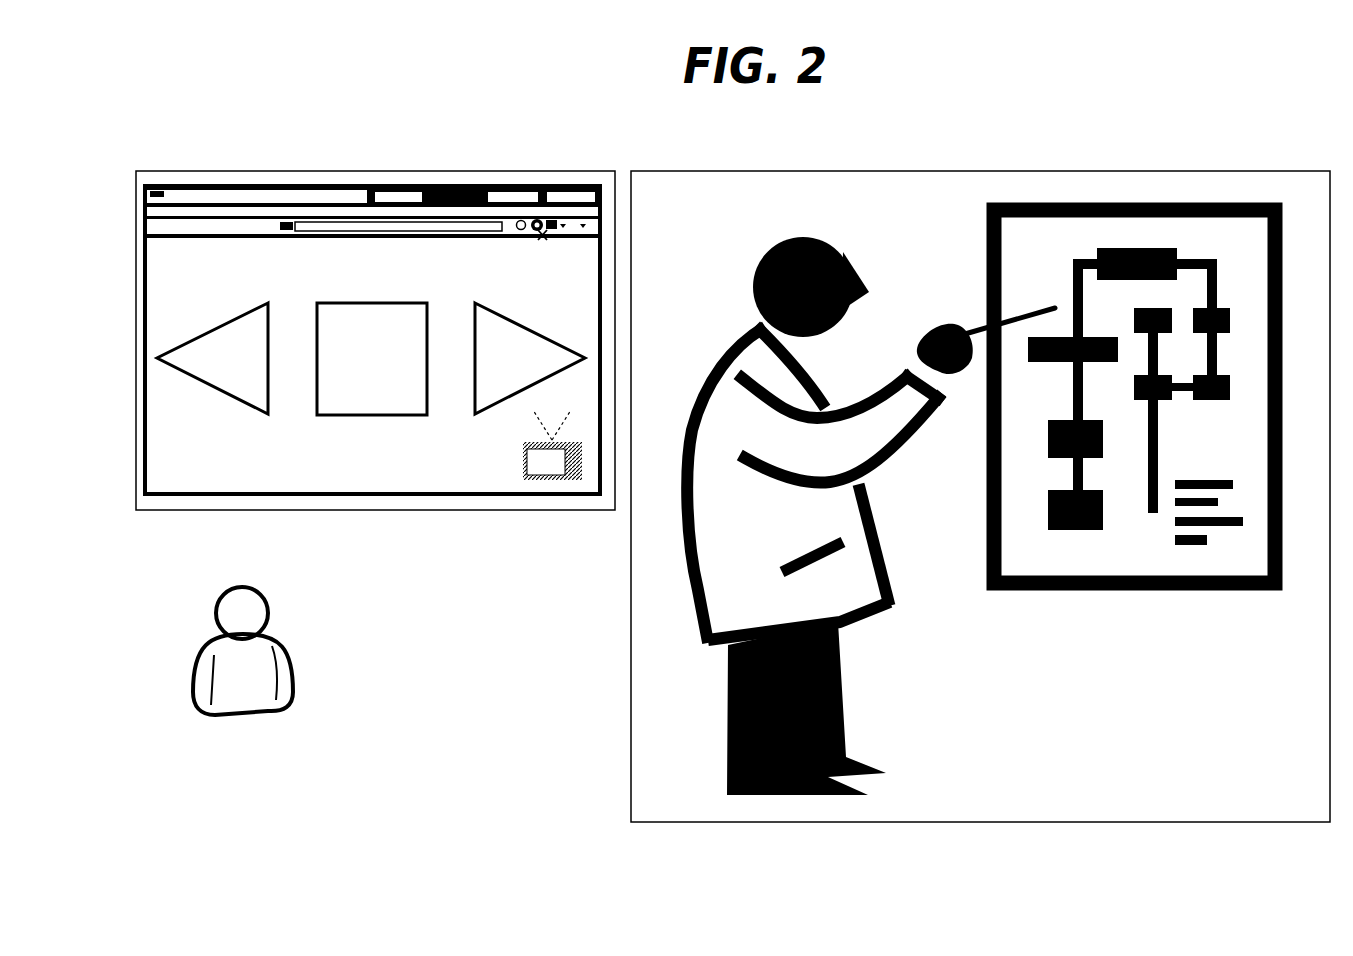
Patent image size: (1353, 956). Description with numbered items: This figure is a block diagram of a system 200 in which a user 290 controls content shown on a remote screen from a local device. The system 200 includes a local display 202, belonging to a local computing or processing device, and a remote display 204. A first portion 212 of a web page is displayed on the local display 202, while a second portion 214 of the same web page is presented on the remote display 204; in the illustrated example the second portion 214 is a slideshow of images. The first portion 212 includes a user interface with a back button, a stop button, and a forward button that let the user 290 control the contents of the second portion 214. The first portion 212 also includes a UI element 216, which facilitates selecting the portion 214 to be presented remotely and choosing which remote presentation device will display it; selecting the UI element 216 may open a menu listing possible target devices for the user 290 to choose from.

The system 200 is at (733, 476).
The local display 202 is at (375, 360).
The remote display 204 is at (980, 512).
The first portion of web page 212 is at (369, 258).
The second portion of web page 214 is at (673, 770).
The UI element 216 is at (550, 474).
The user 290 is at (243, 665).